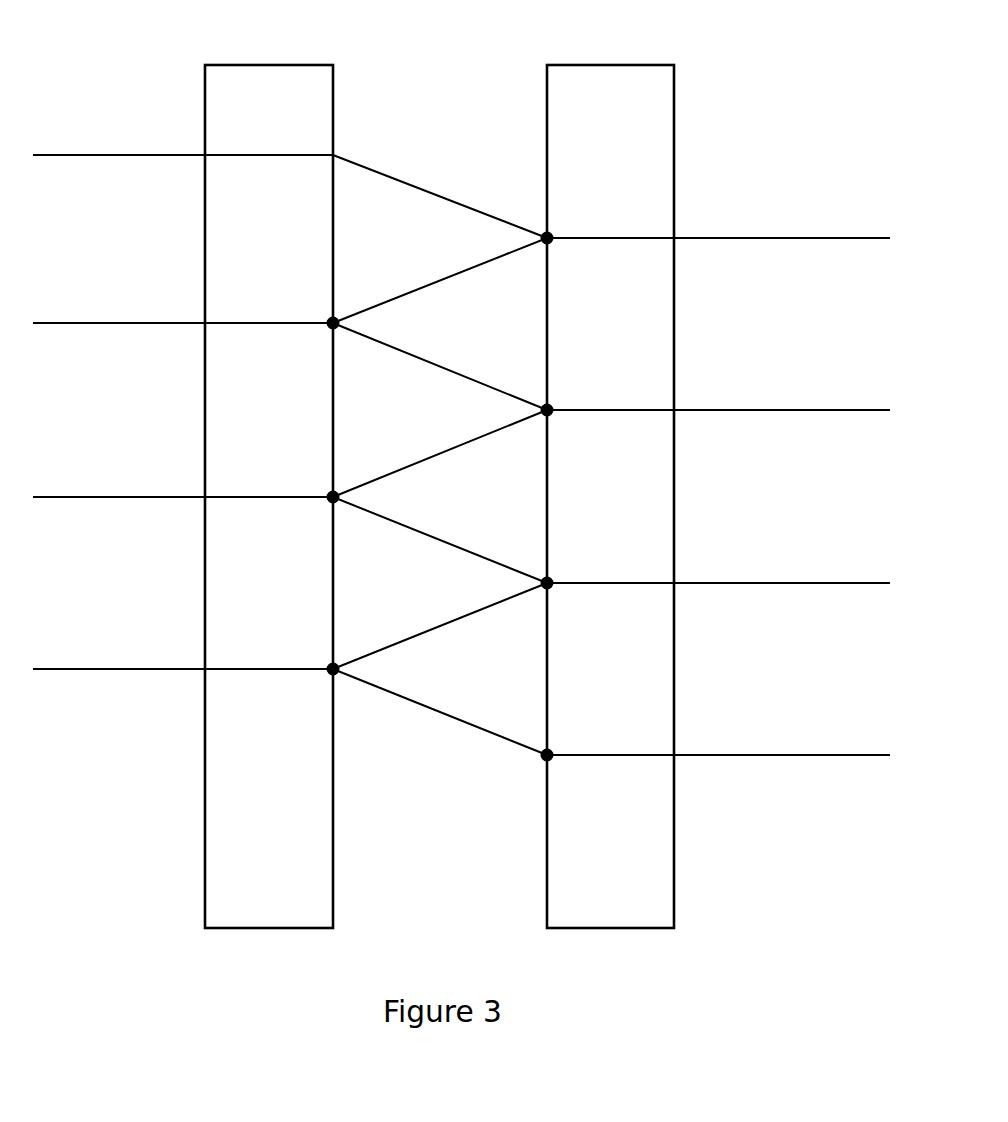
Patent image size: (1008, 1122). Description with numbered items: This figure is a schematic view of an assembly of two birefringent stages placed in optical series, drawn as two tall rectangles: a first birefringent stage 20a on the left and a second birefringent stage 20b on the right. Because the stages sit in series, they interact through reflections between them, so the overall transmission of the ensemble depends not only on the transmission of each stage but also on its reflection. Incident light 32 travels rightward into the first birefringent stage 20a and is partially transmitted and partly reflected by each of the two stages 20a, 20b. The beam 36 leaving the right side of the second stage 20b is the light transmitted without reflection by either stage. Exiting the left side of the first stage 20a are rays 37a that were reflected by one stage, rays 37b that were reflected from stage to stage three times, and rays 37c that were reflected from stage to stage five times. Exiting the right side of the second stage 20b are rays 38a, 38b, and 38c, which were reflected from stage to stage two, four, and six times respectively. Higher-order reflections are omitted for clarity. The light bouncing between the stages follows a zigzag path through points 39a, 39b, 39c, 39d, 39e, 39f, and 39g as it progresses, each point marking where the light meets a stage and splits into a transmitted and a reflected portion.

The first birefringent stage 20a is at (269, 473).
The second birefringent stage 20b is at (610, 473).
The incident light 32 is at (183, 139).
The beam 36 is at (718, 221).
The rays 37a is at (183, 307).
The rays 37b is at (183, 481).
The rays 37c is at (183, 653).
The rays 38a is at (718, 393).
The rays 38b is at (718, 566).
The rays 38c is at (718, 738).
The point 39a is at (572, 224).
The point 39b is at (310, 310).
The point 39c is at (571, 396).
The point 39d is at (310, 484).
The point 39e is at (572, 569).
The point 39f is at (313, 656).
The point 39g is at (572, 741).